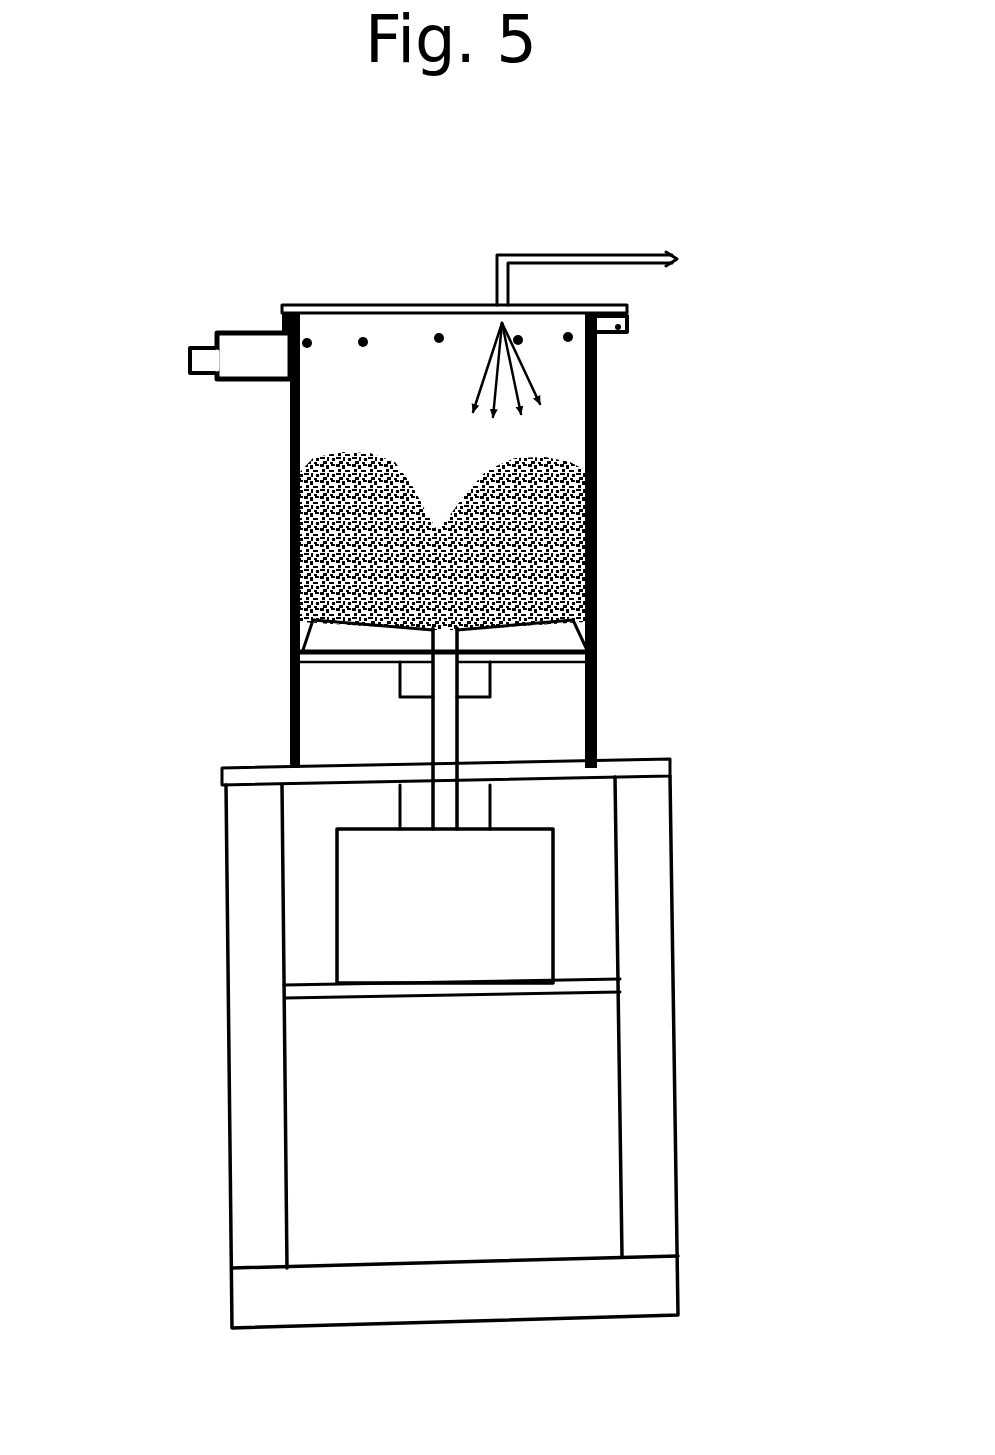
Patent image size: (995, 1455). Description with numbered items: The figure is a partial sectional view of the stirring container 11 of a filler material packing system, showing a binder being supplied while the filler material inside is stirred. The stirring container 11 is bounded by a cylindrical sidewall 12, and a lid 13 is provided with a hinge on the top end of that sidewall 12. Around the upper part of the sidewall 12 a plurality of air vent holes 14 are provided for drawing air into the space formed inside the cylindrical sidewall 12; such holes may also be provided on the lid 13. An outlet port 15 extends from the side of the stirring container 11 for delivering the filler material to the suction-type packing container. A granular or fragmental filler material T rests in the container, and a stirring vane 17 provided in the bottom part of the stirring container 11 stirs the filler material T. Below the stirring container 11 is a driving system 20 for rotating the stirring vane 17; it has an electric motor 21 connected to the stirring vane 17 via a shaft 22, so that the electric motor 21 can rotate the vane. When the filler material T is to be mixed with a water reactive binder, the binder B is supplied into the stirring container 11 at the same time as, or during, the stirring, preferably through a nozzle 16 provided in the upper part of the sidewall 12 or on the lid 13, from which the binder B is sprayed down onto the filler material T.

The stirring container 11 is at (196, 677).
The cylindrical sidewall 12 is at (293, 470).
The lid 13 is at (435, 305).
The air vent holes 14 is at (438, 338).
The outlet port 15 is at (237, 382).
The nozzle 16 is at (538, 253).
The stirring vane 17 is at (580, 632).
The driving system 20 is at (209, 936).
The electric motor 21 is at (553, 918).
The shaft 22 is at (460, 725).
The water reactive binder B is at (535, 370).
The filler material T is at (593, 500).